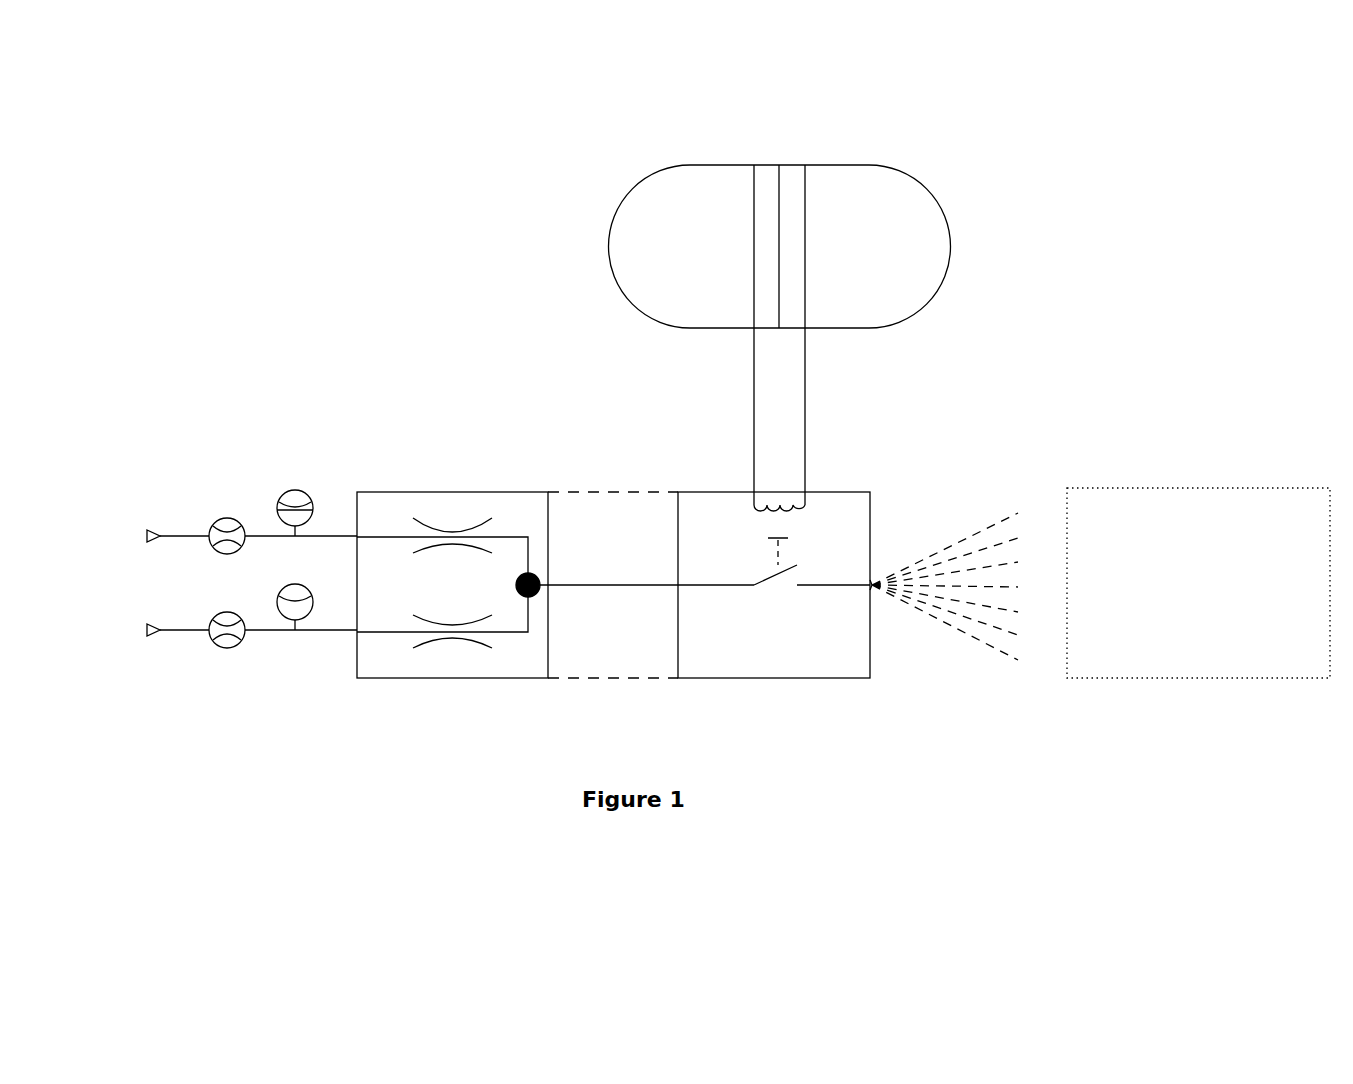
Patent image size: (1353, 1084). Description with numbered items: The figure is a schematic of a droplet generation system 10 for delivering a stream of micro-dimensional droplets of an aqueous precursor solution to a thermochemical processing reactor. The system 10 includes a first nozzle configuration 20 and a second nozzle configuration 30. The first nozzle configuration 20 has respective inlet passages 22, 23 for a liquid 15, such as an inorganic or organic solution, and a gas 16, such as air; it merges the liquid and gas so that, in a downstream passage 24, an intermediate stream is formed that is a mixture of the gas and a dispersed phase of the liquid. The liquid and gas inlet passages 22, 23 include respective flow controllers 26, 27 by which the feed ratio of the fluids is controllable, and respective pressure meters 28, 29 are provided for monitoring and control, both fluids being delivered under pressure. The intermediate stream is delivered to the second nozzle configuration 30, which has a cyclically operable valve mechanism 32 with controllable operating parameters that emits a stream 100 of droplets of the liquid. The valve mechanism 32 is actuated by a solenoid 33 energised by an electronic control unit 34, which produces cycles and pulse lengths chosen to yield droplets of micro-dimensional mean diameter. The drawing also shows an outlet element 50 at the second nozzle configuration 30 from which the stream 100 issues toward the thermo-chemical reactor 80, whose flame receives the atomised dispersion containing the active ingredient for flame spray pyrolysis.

The droplet generation system 10 is at (452, 413).
The liquid 15 is at (133, 630).
The gas 16 is at (135, 535).
The first nozzle configuration 20 is at (431, 684).
The inlet passage 22 is at (185, 632).
The inlet passage 23 is at (180, 535).
The downstream passage 24 is at (540, 591).
The flow controller 26 is at (247, 633).
The flow controller 27 is at (248, 533).
The pressure meter 28 is at (312, 612).
The pressure meter 29 is at (313, 502).
The second nozzle configuration 30 is at (685, 487).
The valve mechanism 32 is at (783, 596).
The solenoid 33 is at (806, 500).
The electronic control unit 34 is at (960, 240).
The nozzle 50 is at (876, 585).
The thermo-chemical reactor 80 is at (1178, 520).
The stream 100 is at (985, 518).